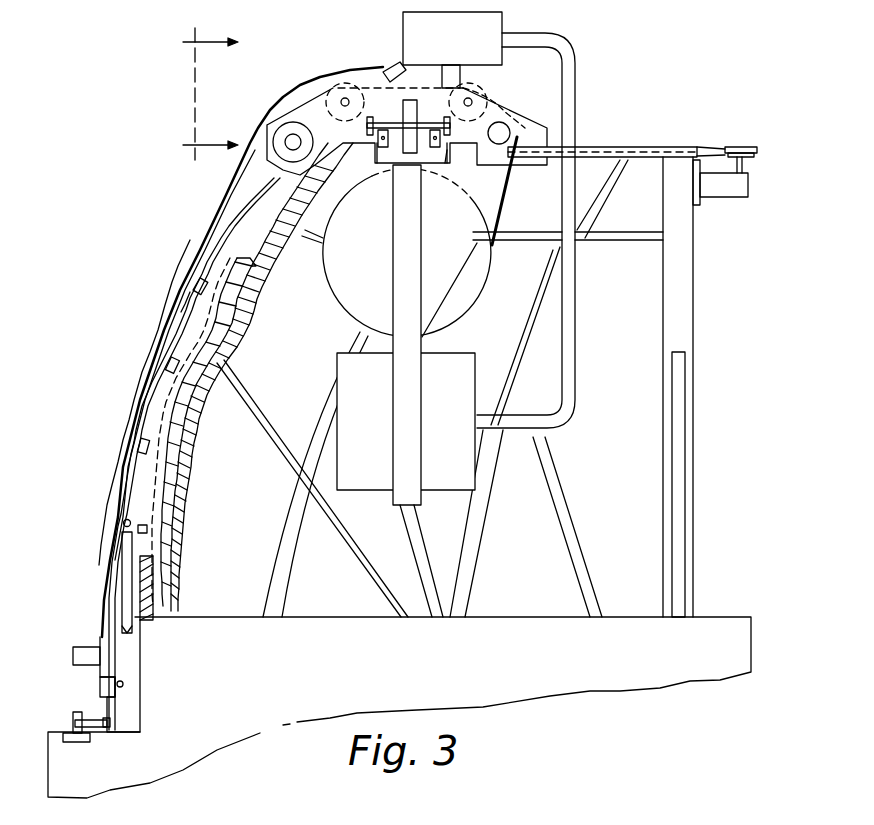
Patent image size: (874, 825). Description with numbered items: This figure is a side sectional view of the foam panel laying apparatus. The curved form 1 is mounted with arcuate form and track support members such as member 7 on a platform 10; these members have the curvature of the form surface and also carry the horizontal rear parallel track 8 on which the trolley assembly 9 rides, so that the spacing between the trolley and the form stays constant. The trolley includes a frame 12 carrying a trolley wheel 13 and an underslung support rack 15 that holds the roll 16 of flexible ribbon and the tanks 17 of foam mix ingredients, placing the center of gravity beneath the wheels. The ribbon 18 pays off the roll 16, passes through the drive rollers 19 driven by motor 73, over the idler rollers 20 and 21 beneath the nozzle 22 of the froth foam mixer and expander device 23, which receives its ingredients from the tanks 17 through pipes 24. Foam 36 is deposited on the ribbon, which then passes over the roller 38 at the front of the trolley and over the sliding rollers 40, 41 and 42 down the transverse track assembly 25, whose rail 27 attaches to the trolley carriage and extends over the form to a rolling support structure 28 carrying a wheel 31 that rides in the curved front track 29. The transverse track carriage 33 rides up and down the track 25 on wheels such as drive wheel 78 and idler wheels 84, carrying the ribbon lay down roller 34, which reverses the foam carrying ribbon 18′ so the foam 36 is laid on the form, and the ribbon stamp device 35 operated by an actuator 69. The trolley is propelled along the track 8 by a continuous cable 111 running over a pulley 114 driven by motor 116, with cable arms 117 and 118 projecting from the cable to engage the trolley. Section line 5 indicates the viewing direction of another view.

The form 1 is at (173, 492).
The section line 5- 5 is at (206, 91).
The vertical form and track support member 7 is at (312, 201).
The rear parallel track 8 is at (388, 155).
The trolley assembly 9 is at (552, 61).
The platform 10 is at (256, 663).
The frame 12 is at (473, 88).
The trolley wheel 13 is at (432, 88).
The underslung support rack 15 is at (433, 292).
The roll of flexible ribbon 16 is at (473, 283).
The tanks of foam mix ingredients 17 is at (467, 370).
The ribbon 18 is at (523, 215).
The foam carrying ribbon 18' is at (185, 385).
The drive rollers 19 is at (533, 117).
The idler roller 20 is at (487, 129).
The idler roller 21 is at (370, 78).
The nozzle 22 is at (393, 62).
The froth foam mixer and expander device 23 is at (503, 14).
The pipes 24 is at (583, 357).
The transverse track assembly 25 is at (124, 376).
The rail 27 is at (180, 310).
The rolling support structure 28 is at (60, 706).
The front track 29 is at (70, 742).
The wheel 31 is at (72, 717).
The transverse track carriage 33 is at (117, 518).
The ribbon lay down roller 34 is at (133, 572).
The ribbon stamp device 35 is at (88, 632).
The foam 36 is at (316, 80).
The roller 38 is at (303, 123).
The sliding roller 40 is at (186, 264).
The sliding roller 41 is at (150, 346).
The sliding roller 42 is at (120, 428).
The actuator 69 is at (73, 657).
The motor 73 is at (507, 140).
The drive wheel 78 is at (103, 677).
The idler wheels 84 is at (120, 524).
The continuous cable 111 is at (438, 157).
The pulley 114 is at (757, 152).
The motor 116 is at (747, 197).
The cable arm 117 is at (352, 148).
The cable arm 118 is at (458, 147).